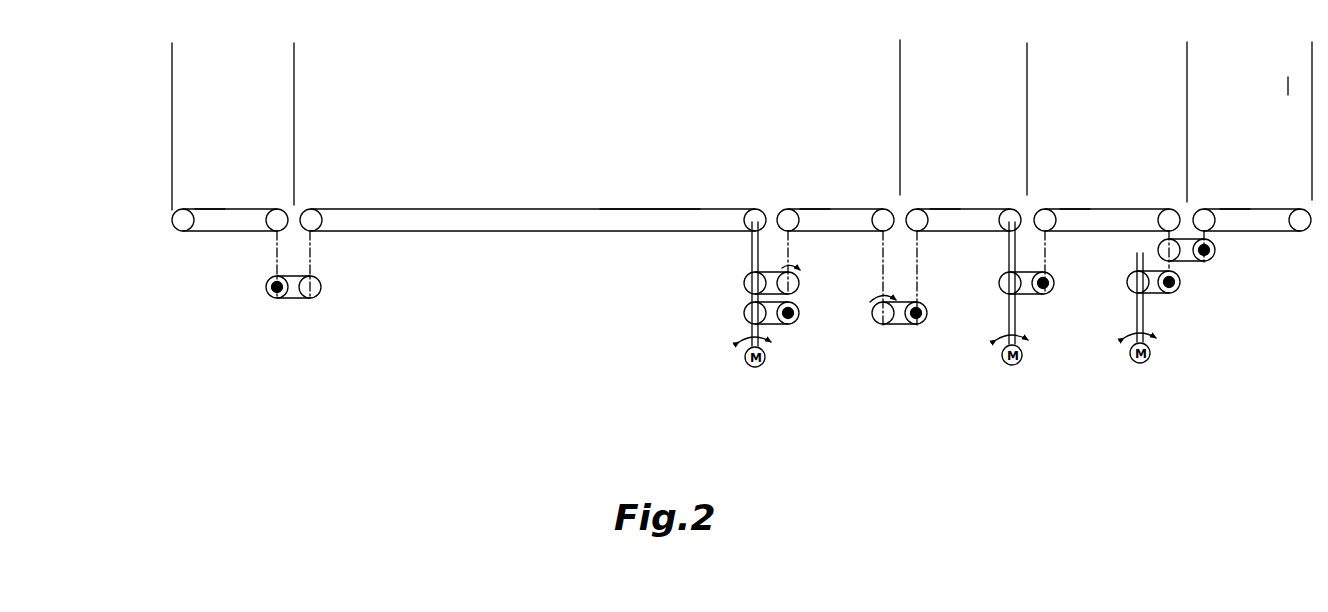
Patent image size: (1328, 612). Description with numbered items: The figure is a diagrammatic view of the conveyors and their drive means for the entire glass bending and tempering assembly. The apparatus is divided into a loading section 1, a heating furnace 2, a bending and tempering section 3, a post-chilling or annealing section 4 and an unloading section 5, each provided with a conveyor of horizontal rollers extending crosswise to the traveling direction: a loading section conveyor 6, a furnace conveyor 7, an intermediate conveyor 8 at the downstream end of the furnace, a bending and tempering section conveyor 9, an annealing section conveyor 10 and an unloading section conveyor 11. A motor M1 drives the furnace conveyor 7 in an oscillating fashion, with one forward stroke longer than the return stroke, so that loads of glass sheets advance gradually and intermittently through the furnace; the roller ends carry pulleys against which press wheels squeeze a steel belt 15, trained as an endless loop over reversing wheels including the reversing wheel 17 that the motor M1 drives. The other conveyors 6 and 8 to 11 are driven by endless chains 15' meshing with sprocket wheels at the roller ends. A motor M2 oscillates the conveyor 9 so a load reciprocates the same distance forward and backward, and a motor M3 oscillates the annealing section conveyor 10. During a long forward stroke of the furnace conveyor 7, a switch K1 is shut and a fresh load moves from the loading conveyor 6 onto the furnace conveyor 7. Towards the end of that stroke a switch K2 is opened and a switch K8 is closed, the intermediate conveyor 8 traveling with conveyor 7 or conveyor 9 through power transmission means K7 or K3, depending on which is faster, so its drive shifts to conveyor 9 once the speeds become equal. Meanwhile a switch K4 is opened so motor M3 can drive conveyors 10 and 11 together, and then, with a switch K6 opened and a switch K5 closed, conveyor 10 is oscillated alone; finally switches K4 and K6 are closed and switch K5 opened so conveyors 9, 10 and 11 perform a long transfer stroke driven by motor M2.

The loading section 1 is at (250, 90).
The heating furnace 2 is at (601, 92).
The bending and tempering section 3 is at (978, 90).
The post-chilling or annealing section 4 is at (1127, 88).
The unloading section 5 is at (1265, 88).
The loading section conveyor 6 is at (241, 210).
The furnace conveyor 7 is at (520, 208).
The intermediate conveyor 8 is at (853, 207).
The bending and tempering section conveyor 9 is at (983, 207).
The annealing section conveyor 10 is at (1125, 207).
The unloading section conveyor 11 is at (1263, 207).
The steel belt 15 is at (650, 185).
The endless chains 15' is at (719, 185).
The reversing wheel 17 is at (754, 209).
The switch K1 is at (270, 266).
The switch K2 is at (838, 329).
The power transmission means K3 is at (878, 351).
The switch K4 is at (1095, 299).
The switch K5 is at (1220, 299).
The switch K6 is at (1255, 266).
The power transmission means K7 is at (840, 298).
The switch K8 is at (970, 334).
The motor M1 is at (770, 404).
The motor M2 is at (1030, 404).
The motor M3 is at (1157, 404).